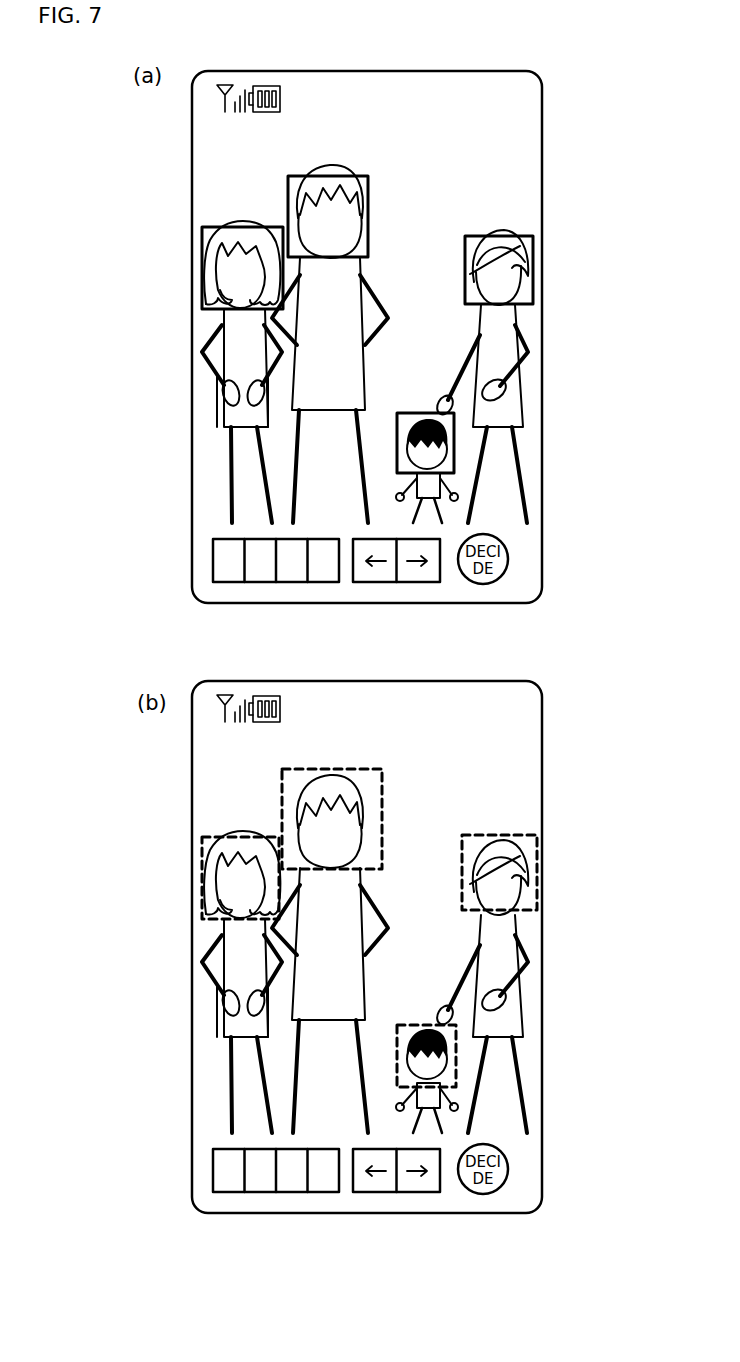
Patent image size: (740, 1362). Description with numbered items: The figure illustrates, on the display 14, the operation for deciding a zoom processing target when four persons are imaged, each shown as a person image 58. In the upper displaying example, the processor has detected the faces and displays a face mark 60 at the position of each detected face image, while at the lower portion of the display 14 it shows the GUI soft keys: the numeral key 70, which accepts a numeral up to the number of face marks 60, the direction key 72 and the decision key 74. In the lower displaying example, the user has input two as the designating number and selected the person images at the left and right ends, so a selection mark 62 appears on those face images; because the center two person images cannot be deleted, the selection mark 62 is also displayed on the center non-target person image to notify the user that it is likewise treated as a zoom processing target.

The display 14 is at (507, 130).
The person image 58 is at (512, 406).
The face mark 60 is at (468, 235).
The selection mark 62 is at (462, 835).
The numeral key 70 is at (204, 551).
The direction key 72 is at (397, 594).
The decision key 74 is at (500, 550).